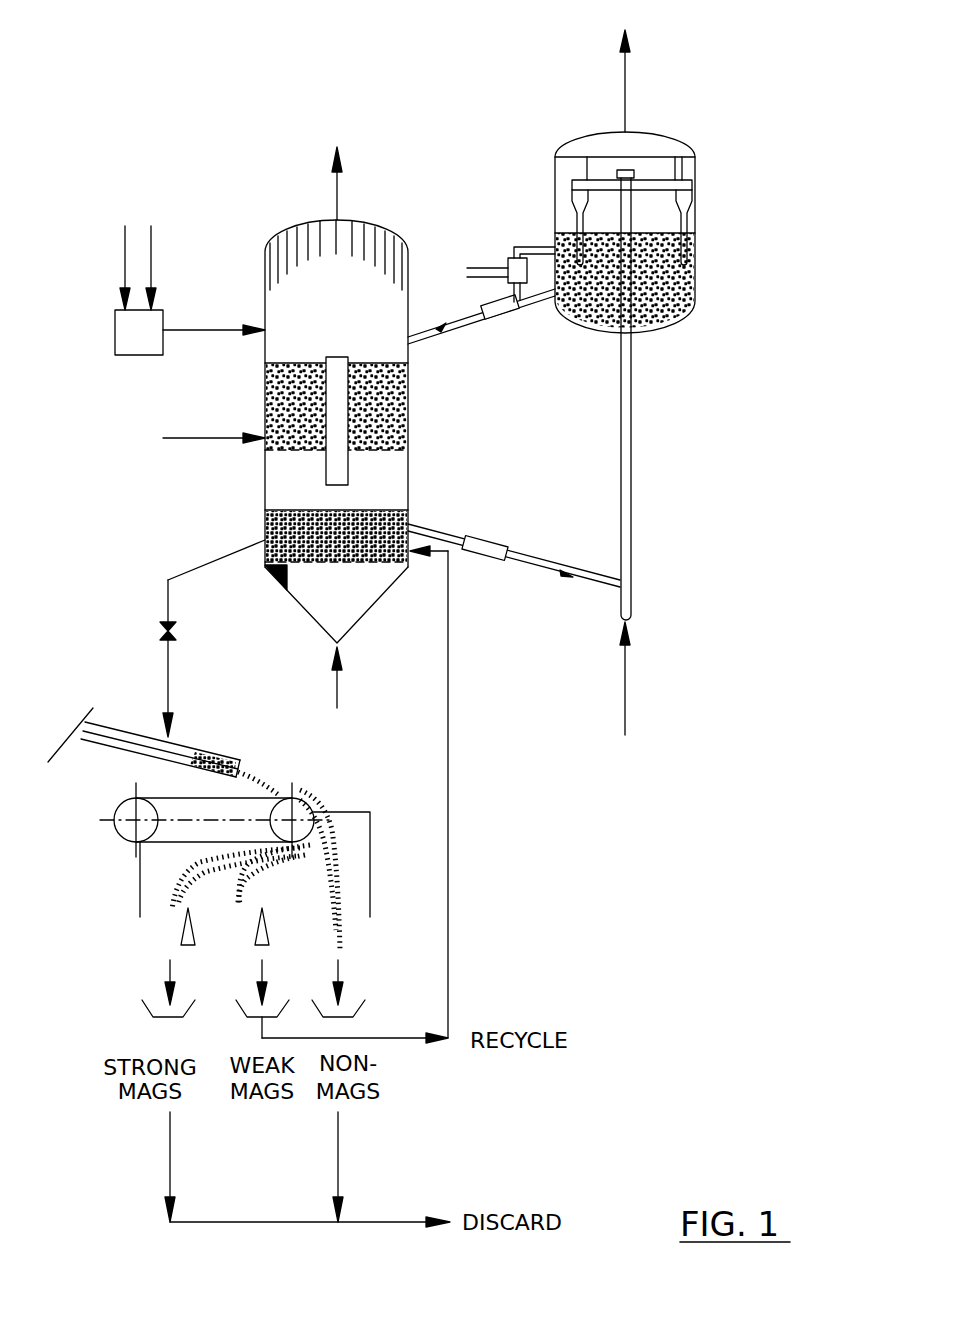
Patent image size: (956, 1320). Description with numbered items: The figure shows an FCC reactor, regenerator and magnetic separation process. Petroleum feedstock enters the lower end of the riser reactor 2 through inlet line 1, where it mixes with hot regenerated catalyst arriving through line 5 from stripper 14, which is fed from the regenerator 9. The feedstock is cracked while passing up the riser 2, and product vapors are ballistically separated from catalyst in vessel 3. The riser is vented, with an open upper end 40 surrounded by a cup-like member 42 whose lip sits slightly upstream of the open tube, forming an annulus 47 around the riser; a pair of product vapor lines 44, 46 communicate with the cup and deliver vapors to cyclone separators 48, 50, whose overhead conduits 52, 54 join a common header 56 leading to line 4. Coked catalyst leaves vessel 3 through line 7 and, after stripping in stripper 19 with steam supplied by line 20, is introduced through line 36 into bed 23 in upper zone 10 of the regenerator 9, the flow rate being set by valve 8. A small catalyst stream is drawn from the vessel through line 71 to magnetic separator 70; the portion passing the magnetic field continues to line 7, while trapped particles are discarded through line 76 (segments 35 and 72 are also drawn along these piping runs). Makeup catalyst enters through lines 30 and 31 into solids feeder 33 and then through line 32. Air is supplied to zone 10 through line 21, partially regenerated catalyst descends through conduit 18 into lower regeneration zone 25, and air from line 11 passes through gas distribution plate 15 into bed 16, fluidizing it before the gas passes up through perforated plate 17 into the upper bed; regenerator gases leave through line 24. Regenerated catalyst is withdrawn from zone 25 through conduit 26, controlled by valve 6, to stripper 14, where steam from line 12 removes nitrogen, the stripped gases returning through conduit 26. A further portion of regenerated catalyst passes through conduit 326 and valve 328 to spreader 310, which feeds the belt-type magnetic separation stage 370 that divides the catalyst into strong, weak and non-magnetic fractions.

The inlet line 1 is at (625, 694).
The riser reactor 2 is at (632, 442).
The separator vessel 3 is at (655, 328).
The line 4 is at (625, 66).
The line 5 is at (605, 588).
The valve 6 is at (545, 568).
The line 7 is at (555, 300).
The valve 8 is at (440, 328).
The regenerator 9 is at (408, 492).
The upper zone 10 is at (408, 456).
The line 11 is at (336, 695).
The line 12 is at (486, 575).
The stripper 14 is at (510, 562).
The gas distribution plate 15 is at (282, 582).
The bed 16 is at (358, 548).
The perforated plate 17 is at (300, 455).
The conduit 18 is at (290, 494).
The stripper 19 is at (512, 312).
The line 20 is at (492, 330).
The line 21 is at (175, 438).
The bed 23 is at (385, 422).
The line 24 is at (334, 168).
The lower regeneration zone 25 is at (265, 532).
The conduit 26 is at (455, 539).
The line 30 is at (151, 245).
The line 31 is at (125, 245).
The line 32 is at (188, 330).
The solids feeder 33 is at (154, 350).
The pipe section 35 is at (470, 320).
The line 36 is at (420, 340).
The open upper end 40 is at (619, 170).
The cup-like member 42 is at (630, 158).
The product vapor line 44 is at (598, 196).
The product vapor line 46 is at (676, 170).
The annulus 47 is at (644, 196).
The cyclone separator 48 is at (557, 178).
The cyclone separator 50 is at (693, 196).
The overhead conduit 52 is at (574, 164).
The overhead conduit 54 is at (693, 174).
The common header 56 is at (682, 147).
The magnetic separator 70 is at (512, 260).
The line 71 is at (535, 248).
The valve outlet 72 is at (500, 294).
The line 76 is at (494, 272).
The spreader 310 is at (125, 738).
The conduit 326 is at (165, 585).
The valve 328 is at (158, 633).
The magnetic separator 370 is at (272, 786).